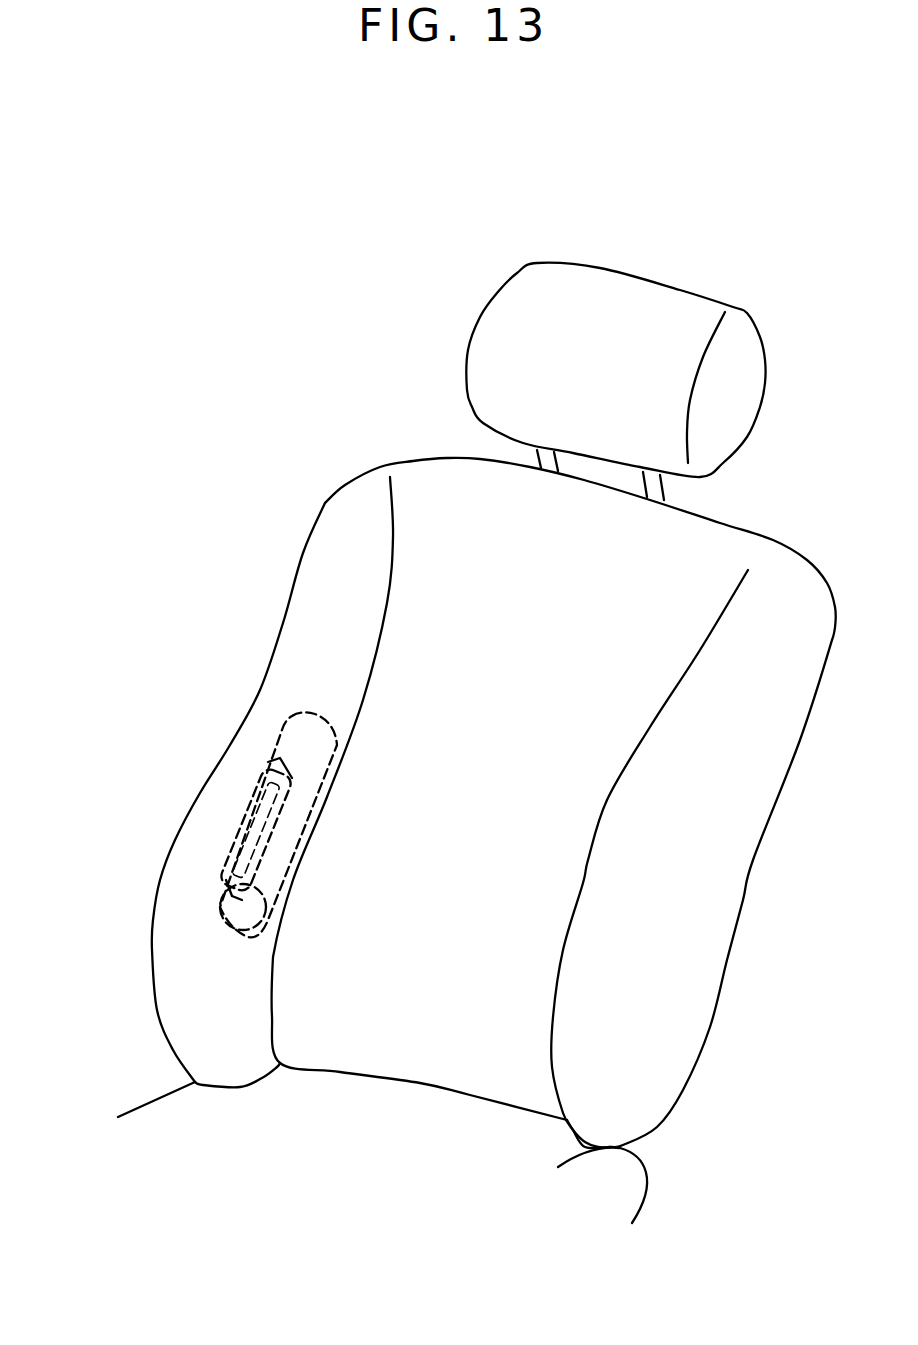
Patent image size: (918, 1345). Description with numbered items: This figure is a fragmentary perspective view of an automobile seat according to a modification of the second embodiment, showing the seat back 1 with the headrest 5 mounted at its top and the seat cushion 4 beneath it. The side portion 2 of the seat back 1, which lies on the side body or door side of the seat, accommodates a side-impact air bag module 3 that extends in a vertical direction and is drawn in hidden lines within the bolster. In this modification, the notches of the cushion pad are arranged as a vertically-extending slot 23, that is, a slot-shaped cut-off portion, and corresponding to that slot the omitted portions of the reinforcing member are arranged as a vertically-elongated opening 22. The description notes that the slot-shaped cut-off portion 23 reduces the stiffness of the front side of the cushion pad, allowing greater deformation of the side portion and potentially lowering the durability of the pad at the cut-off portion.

The seat back 1 is at (485, 593).
The side portion 2 is at (322, 572).
The side-impact air bag module 3 is at (290, 723).
The seat cushion 4 is at (188, 1125).
The headrest 5 is at (510, 320).
The vertically-elongated opening 22 is at (215, 928).
The vertically-extending slot 23 is at (247, 807).